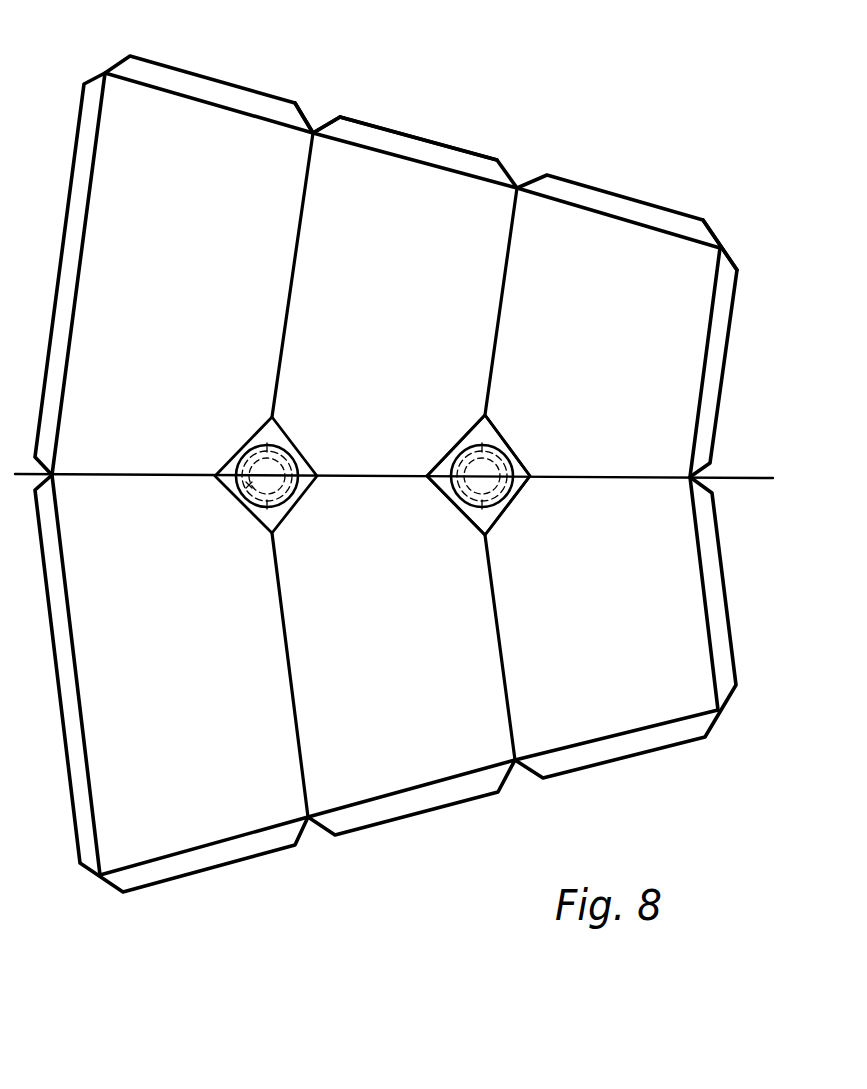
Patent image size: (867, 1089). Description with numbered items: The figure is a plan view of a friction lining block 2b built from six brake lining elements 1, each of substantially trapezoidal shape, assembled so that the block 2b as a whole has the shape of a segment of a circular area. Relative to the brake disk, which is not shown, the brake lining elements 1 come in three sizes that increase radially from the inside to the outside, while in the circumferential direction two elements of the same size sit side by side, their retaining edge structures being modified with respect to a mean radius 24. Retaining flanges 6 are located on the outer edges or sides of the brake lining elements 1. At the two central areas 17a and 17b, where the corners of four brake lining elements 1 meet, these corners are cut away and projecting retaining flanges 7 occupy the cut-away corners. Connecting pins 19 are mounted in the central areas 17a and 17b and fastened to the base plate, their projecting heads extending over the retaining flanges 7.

The brake lining element 1 is at (245, 277).
The friction lining block 2b is at (415, 118).
The retaining flange 6 is at (363, 132).
The projecting retaining flange 7 is at (478, 433).
The central area 17a is at (502, 441).
The central area 17b is at (243, 434).
The connecting pin 19 is at (238, 495).
The mean radius 24 is at (728, 478).